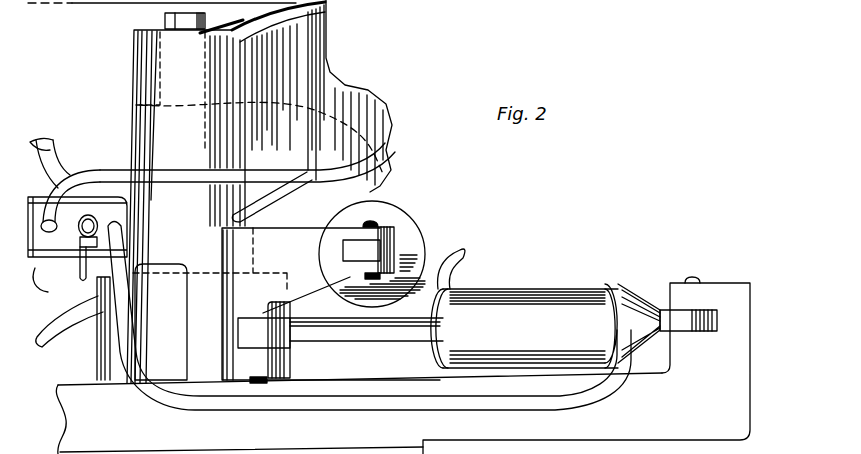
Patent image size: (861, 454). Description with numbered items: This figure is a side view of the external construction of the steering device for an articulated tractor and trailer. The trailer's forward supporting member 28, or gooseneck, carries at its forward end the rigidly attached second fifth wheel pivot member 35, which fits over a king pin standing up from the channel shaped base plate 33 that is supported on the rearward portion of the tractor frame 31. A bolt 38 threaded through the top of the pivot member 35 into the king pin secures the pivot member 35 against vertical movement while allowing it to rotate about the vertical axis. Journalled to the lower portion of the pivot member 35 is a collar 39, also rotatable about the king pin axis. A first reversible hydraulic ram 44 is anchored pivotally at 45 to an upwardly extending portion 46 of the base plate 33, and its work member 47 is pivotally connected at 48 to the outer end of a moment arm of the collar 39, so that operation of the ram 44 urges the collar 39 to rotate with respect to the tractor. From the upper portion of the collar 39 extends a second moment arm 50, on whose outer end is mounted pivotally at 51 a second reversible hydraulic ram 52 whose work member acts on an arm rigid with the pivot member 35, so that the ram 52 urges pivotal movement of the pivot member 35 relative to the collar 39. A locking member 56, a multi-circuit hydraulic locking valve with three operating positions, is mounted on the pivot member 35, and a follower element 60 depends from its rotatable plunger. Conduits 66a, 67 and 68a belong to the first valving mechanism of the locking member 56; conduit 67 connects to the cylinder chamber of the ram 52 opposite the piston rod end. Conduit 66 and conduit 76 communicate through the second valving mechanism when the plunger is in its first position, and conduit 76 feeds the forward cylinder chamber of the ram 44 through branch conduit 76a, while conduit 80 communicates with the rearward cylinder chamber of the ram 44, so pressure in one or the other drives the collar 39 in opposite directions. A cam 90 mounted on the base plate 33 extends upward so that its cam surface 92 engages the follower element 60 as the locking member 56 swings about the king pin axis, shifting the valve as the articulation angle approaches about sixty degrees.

The supporting member 28 is at (306, 33).
The tractor frame 31 is at (56, 452).
The base plate 33 is at (740, 410).
The second fifth wheel pivot member 35 is at (133, 65).
The bolt 38 is at (165, 20).
The collar 39 is at (270, 227).
The first reversible hydraulic ram 44 is at (518, 334).
The pivotal anchor 45 is at (687, 303).
The upwardly extending portion 46 is at (738, 307).
The work member 47 is at (370, 332).
The pivotal connection 48 is at (277, 355).
The second moment arm 50 is at (305, 240).
The pivotal mounting 51 is at (377, 223).
The second reversible hydraulic ram 52 is at (422, 230).
The locking member 56 is at (66, 262).
The follower element 60 is at (86, 282).
The conduit 66 is at (90, 215).
The conduit 66a is at (48, 148).
The conduit 67 is at (80, 172).
The conduit 68a is at (58, 300).
The conduit 76 is at (107, 242).
The branch conduit 76a is at (462, 268).
The conduit 80 is at (118, 348).
The cam 90 is at (173, 300).
The cam surface 92 is at (167, 270).